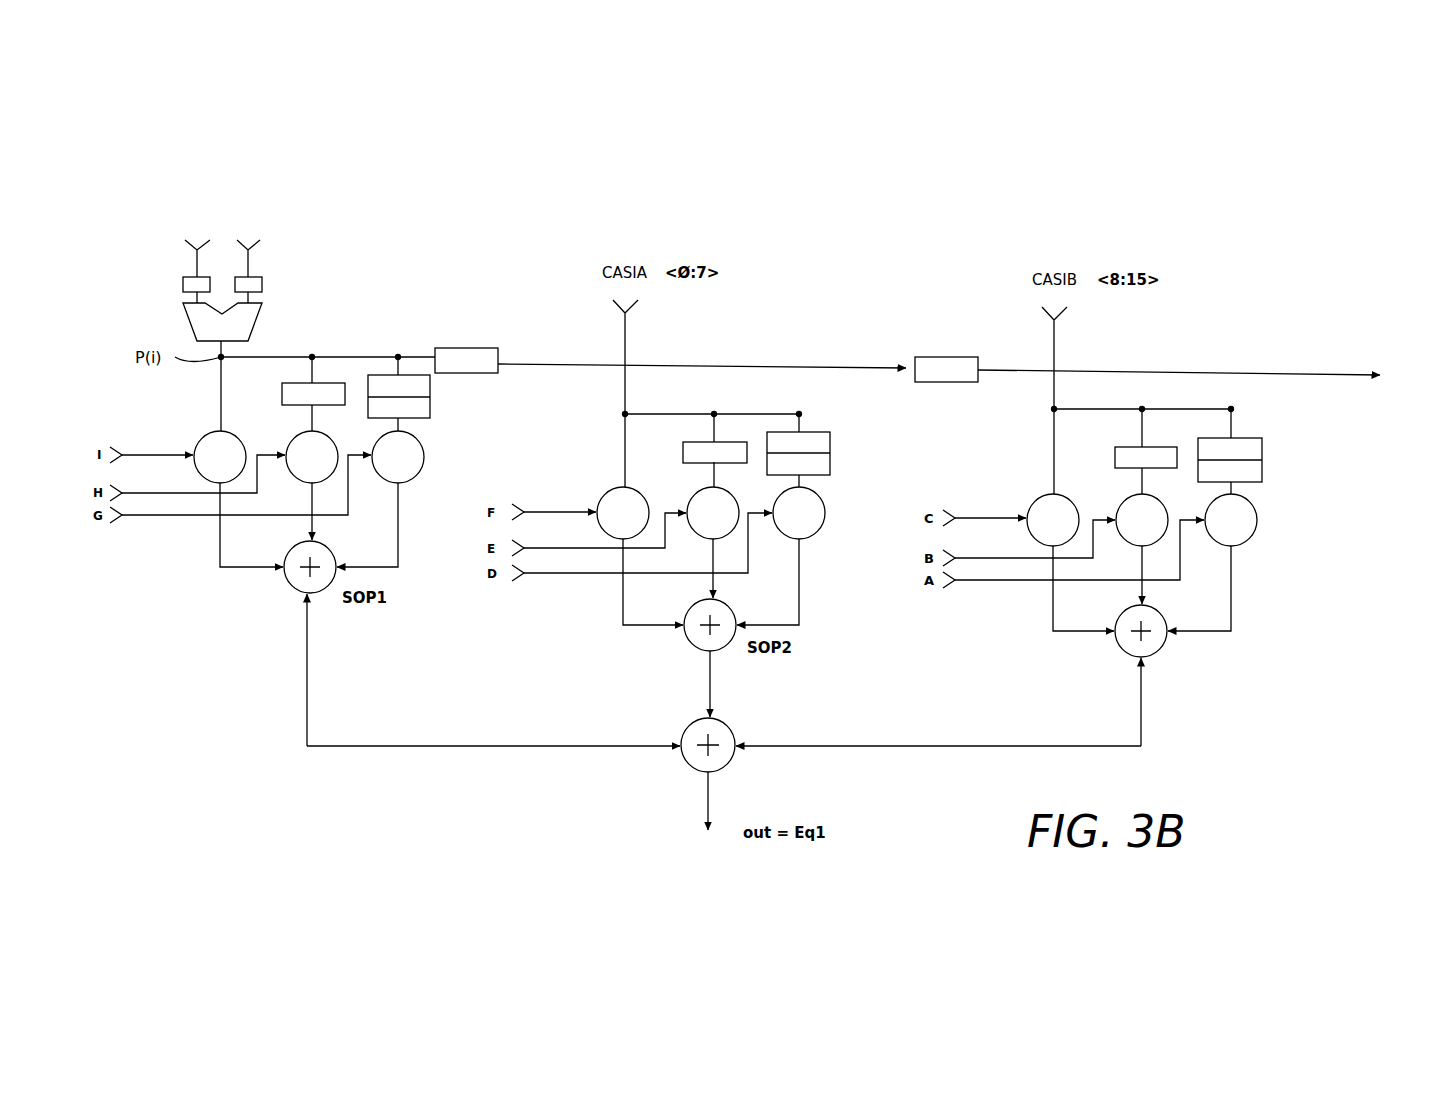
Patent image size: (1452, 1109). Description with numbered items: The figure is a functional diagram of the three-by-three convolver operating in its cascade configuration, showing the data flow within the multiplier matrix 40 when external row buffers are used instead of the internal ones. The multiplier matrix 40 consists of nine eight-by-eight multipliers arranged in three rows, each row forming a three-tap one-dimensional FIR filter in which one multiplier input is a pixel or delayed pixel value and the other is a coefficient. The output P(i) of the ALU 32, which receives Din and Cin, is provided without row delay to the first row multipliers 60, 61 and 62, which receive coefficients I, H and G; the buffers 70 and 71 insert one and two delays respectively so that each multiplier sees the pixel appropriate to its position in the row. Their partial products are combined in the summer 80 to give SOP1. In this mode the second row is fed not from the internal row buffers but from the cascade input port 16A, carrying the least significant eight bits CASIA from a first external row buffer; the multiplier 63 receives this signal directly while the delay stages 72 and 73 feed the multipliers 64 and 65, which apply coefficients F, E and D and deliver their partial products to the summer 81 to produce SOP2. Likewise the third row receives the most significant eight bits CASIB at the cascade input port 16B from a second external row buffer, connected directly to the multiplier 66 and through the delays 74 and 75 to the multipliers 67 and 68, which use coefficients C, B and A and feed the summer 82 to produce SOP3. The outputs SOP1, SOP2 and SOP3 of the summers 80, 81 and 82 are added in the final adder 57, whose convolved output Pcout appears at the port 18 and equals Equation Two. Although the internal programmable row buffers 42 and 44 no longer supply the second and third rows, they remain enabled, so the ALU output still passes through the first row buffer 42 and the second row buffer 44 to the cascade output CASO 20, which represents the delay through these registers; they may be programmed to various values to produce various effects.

The ALU 32 is at (258, 323).
The first programmable row buffer delay element 42 is at (483, 363).
The row buffer 44 is at (957, 383).
The cascade input port CASIA 16A is at (632, 310).
The cascade input port CASIB 16B is at (1060, 316).
The cascade output CASO 20 is at (1378, 378).
The output port 18 is at (706, 820).
The final adder 57 is at (695, 757).
The multiplier 60 is at (203, 437).
The multiplier 61 is at (292, 440).
The multiplier 62 is at (425, 445).
The multiplier 63 is at (607, 488).
The multiplier 64 is at (693, 490).
The multiplier 65 is at (823, 522).
The multiplier 66 is at (1036, 498).
The multiplier 67 is at (1130, 495).
The multiplier 68 is at (1208, 499).
The buffer 70 is at (282, 399).
The buffer 71 is at (430, 385).
The delay stage 72 is at (683, 452).
The delay stage 73 is at (830, 447).
The delay 74 is at (1115, 458).
The delay 75 is at (1262, 445).
The summer 80 is at (325, 545).
The summer 81 is at (725, 601).
The summer 82 is at (1157, 607).
The multiplier matrix 40 is at (1226, 664).